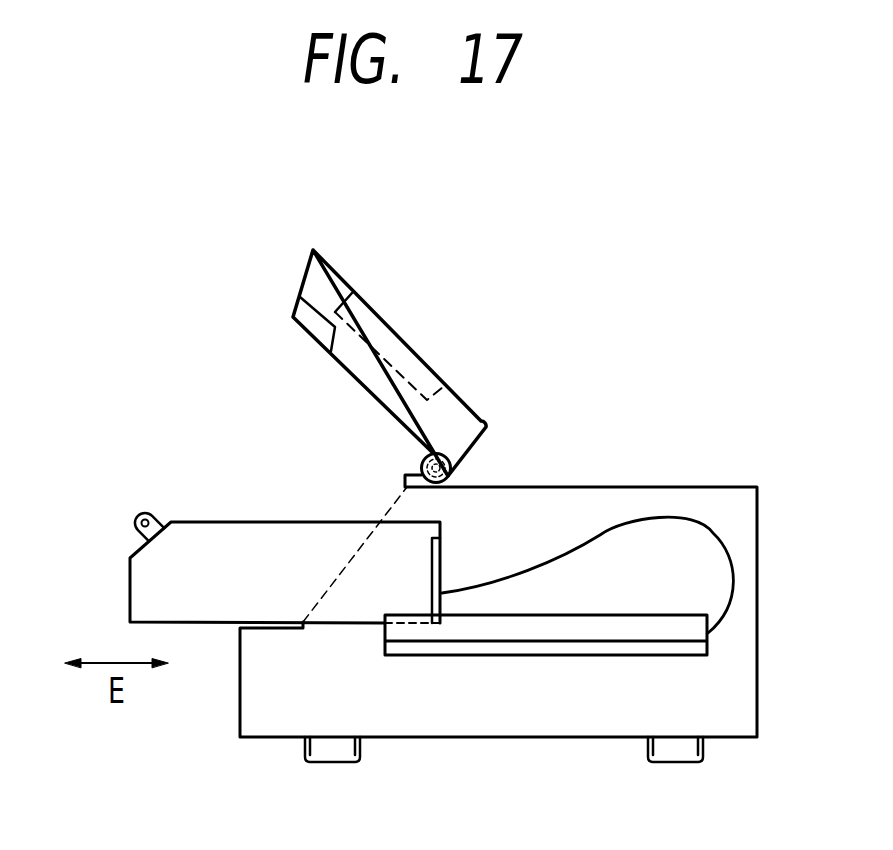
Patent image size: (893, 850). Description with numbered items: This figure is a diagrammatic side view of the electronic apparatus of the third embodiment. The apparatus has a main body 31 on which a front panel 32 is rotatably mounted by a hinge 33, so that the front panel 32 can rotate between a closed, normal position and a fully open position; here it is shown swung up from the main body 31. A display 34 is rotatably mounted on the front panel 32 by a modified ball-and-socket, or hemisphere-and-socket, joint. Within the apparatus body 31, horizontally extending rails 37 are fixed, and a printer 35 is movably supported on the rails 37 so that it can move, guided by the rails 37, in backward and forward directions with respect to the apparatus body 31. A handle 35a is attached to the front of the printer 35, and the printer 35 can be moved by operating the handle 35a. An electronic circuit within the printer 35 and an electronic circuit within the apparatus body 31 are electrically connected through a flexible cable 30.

The flexible cable 30 is at (670, 513).
The main body 31 is at (742, 543).
The front panel 32 is at (320, 277).
The hinge 33 is at (437, 463).
The display 34 is at (400, 350).
The printer 35 is at (163, 580).
The handle 35a is at (138, 513).
The rails 37 is at (385, 637).